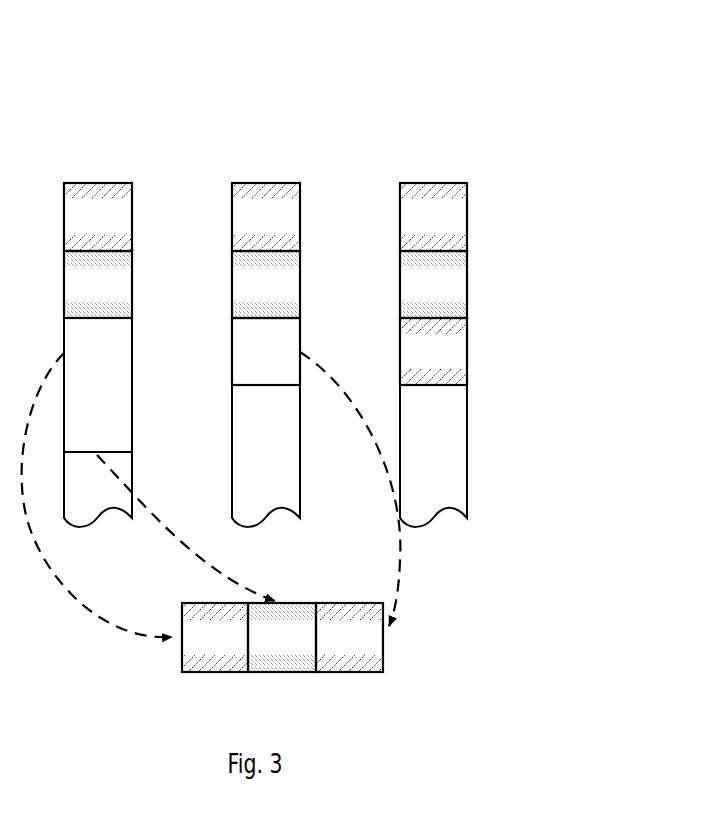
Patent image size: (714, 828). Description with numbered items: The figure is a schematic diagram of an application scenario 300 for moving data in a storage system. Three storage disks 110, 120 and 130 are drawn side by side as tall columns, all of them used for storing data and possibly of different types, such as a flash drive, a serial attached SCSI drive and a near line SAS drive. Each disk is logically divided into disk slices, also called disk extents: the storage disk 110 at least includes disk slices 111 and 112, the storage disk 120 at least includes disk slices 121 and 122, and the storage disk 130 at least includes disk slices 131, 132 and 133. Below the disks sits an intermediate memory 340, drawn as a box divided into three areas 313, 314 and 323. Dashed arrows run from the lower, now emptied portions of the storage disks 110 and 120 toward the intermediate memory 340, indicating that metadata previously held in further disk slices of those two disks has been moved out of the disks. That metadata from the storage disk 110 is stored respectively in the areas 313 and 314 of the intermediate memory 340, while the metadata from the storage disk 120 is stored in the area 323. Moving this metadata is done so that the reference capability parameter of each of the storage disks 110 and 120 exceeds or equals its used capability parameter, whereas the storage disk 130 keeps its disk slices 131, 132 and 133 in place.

The application scenario 300 is at (135, 44).
The storage disk 110 is at (132, 183).
The disk slice 111 is at (98, 217).
The disk slice 112 is at (98, 284).
The storage disk 120 is at (300, 183).
The disk slice 121 is at (266, 217).
The disk slice 122 is at (266, 284).
The storage disk 130 is at (467, 183).
The disk slice 131 is at (433, 217).
The disk slice 132 is at (433, 284).
The disk slice 133 is at (433, 351).
The intermediate memory 340 is at (383, 654).
The area of the intermediate memory 313 is at (215, 637).
The area of the intermediate memory 314 is at (282, 637).
The area of the intermediate memory 323 is at (349, 637).